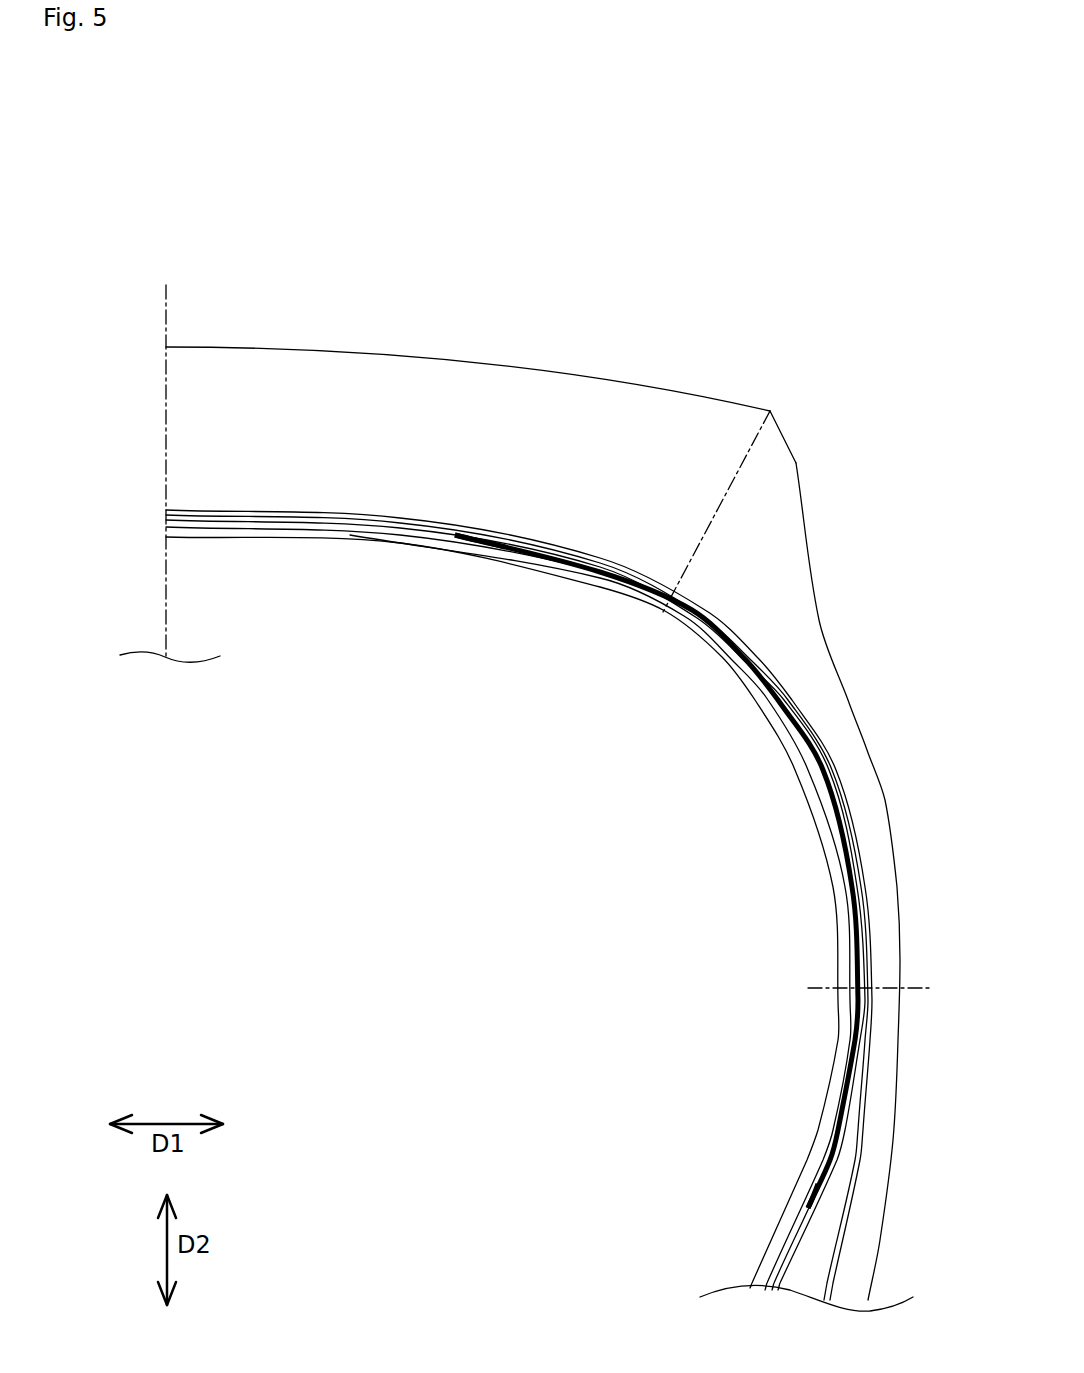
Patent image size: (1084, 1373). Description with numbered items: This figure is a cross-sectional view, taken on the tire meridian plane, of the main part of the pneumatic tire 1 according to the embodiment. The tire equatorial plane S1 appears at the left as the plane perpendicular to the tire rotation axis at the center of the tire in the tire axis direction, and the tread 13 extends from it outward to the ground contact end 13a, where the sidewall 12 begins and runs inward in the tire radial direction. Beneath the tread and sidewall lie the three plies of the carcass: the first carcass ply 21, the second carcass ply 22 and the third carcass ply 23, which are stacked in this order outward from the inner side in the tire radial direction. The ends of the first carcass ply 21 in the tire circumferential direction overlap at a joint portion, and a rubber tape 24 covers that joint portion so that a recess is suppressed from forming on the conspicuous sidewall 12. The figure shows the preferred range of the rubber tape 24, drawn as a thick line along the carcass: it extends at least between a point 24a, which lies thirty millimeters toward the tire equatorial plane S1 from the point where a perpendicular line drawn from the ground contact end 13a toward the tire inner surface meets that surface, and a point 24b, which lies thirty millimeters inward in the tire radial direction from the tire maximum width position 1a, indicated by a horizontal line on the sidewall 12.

The pneumatic tire 1 is at (802, 296).
The tire maximum width position 1a is at (888, 988).
The sidewall 12 is at (877, 748).
The tread 13 is at (472, 360).
The ground contact end 13a is at (770, 411).
The first carcass ply 21 is at (787, 1235).
The second carcass ply 22 is at (777, 1268).
The third carcass ply 23 is at (850, 1220).
The rubber tape 24 is at (823, 777).
The point 24a is at (455, 538).
The point 24b is at (808, 1208).
The tire equatorial plane S1 is at (170, 610).